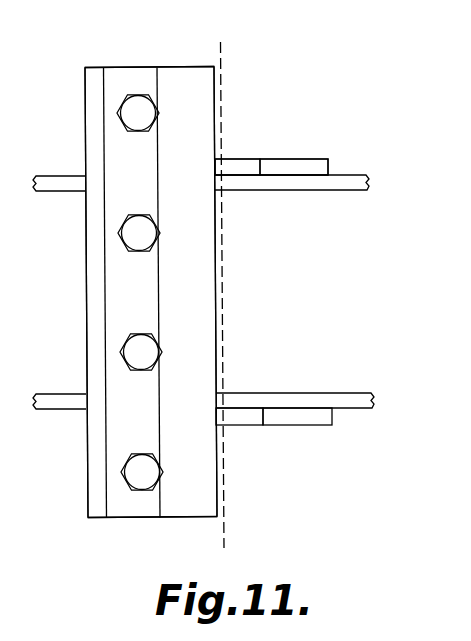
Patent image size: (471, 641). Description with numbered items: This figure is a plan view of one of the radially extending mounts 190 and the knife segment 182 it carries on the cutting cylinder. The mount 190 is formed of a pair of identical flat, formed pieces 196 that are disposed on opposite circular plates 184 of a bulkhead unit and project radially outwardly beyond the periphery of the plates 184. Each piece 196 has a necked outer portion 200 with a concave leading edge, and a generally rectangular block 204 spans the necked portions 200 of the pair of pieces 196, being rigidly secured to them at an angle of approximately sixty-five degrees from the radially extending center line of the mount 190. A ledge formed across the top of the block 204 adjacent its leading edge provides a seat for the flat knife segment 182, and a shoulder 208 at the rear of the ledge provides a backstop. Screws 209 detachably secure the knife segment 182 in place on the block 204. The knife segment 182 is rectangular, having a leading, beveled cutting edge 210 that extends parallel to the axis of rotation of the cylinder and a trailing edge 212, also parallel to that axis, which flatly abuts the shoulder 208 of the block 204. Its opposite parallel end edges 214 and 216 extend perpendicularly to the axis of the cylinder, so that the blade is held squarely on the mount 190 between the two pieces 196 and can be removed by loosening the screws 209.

The knife segment 182 is at (68, 61).
The circular plate 184 is at (345, 186).
The mount 190 is at (330, 146).
The formed piece 196 is at (287, 167).
The necked outer portion 200 is at (240, 168).
The rectangular block 204 is at (200, 113).
The shoulder 208 is at (168, 271).
The screw 209 is at (151, 119).
The cutting edge 210 is at (87, 293).
The trailing edge 212 is at (160, 313).
The end edge 214 is at (139, 518).
The end edge 216 is at (140, 67).